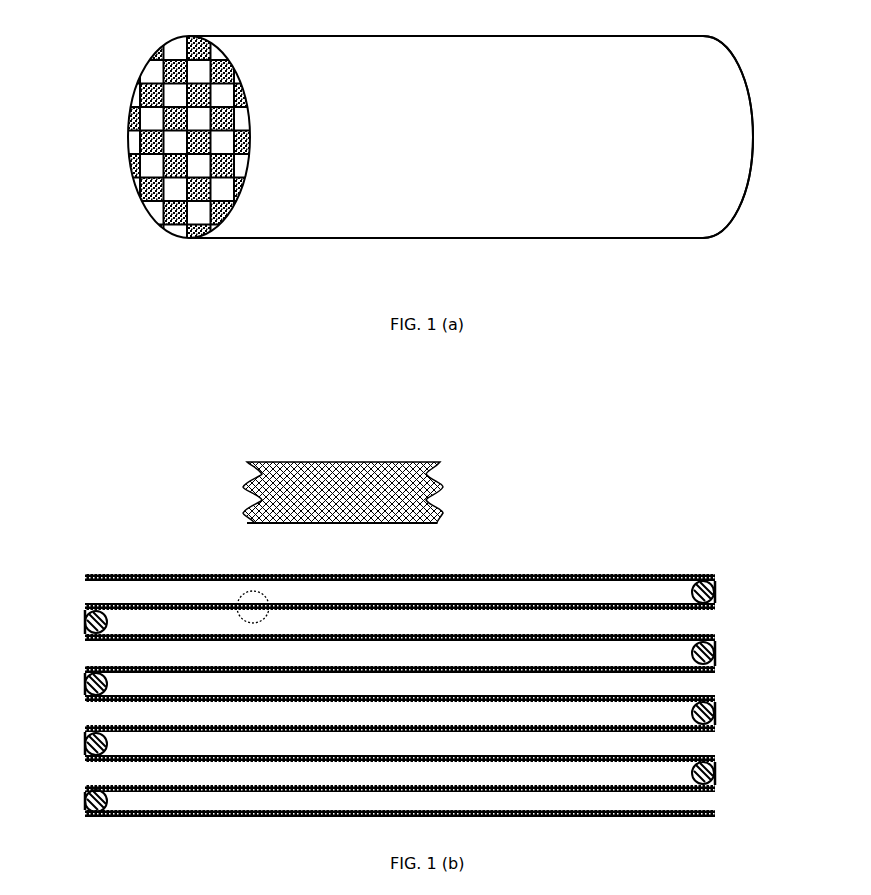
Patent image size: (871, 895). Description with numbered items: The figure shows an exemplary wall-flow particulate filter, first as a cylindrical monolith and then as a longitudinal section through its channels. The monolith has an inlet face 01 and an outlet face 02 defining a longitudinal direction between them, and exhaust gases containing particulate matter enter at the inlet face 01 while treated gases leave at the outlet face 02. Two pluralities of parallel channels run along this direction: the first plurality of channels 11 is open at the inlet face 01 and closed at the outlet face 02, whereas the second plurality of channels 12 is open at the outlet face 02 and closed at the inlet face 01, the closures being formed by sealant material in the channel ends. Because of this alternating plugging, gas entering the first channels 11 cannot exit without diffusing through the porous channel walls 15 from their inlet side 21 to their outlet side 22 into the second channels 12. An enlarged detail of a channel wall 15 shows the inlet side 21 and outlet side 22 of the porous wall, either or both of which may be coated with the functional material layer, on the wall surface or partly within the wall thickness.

The inlet face 01 is at (117, 110).
The outlet face 02 is at (763, 138).
The first plurality of channels 11 is at (97, 592).
The second plurality of channels 12 is at (700, 622).
The channel walls 15 is at (240, 603).
The inlet side 21 is at (341, 460).
The outlet side 22 is at (353, 532).